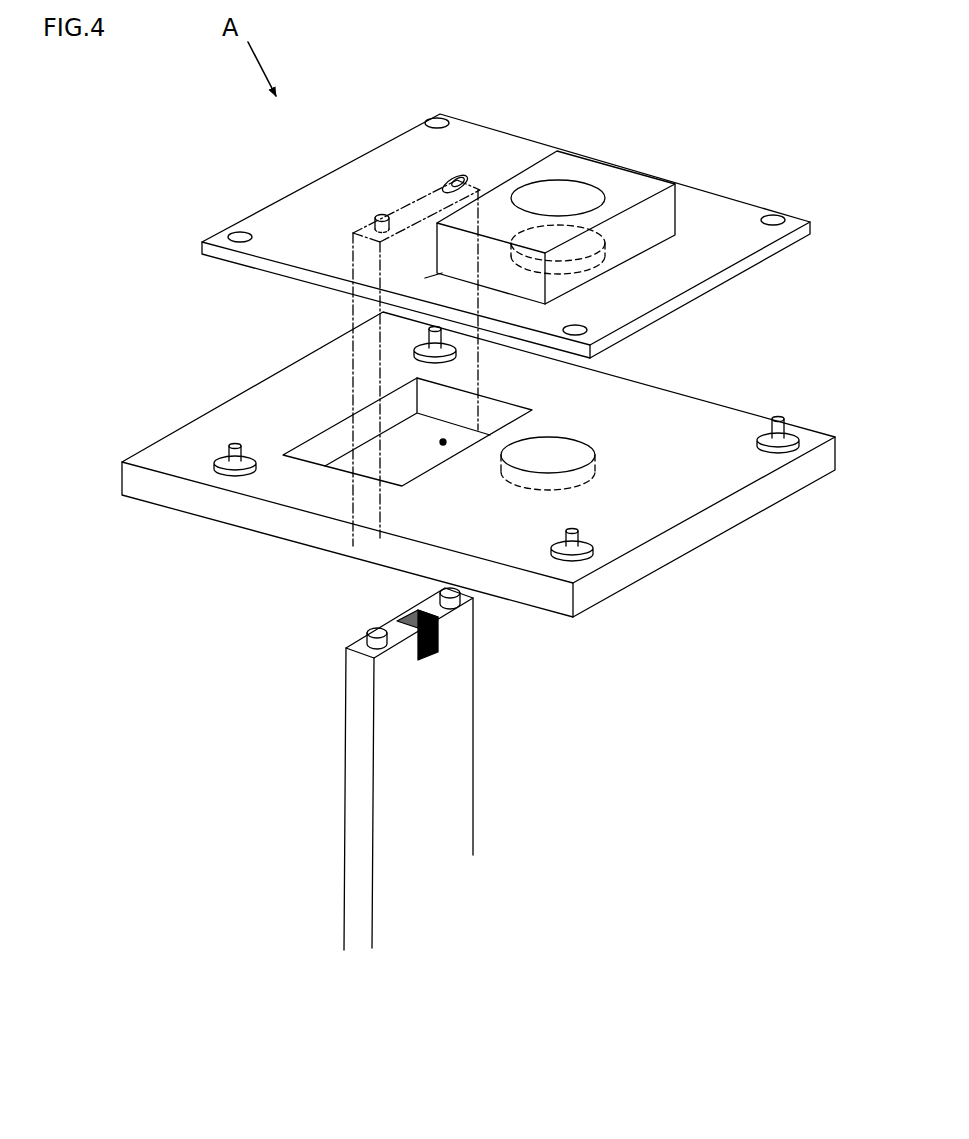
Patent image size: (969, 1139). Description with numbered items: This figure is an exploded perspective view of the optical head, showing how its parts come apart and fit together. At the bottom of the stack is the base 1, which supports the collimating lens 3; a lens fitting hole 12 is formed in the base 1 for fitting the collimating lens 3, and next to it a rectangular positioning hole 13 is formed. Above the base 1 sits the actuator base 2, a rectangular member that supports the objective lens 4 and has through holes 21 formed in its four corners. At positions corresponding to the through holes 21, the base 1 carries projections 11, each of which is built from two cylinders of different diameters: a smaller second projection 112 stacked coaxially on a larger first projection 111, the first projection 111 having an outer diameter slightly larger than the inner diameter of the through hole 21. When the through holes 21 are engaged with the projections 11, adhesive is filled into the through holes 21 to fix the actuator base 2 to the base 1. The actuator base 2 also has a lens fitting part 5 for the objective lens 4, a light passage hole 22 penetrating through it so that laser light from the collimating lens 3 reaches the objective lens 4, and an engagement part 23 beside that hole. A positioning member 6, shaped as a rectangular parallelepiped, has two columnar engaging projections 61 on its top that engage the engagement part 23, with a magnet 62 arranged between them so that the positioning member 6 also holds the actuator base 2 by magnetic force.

The base 1 is at (160, 455).
The actuator base 2 is at (510, 147).
The collimating lens 3 is at (548, 458).
The objective lens 4 is at (568, 190).
The lens fitting part 5 is at (656, 202).
The positioning member 6 is at (343, 333).
The projection 11 is at (193, 472).
The lens fitting hole 12 is at (597, 468).
The positioning hole 13 is at (446, 441).
The through hole 21 is at (439, 117).
The light passage hole 22 is at (420, 281).
The engagement part 23 is at (448, 184).
The engaging projection 61 is at (440, 593).
The magnet 62 is at (428, 660).
The first projection 111 is at (226, 472).
The second projection 112 is at (233, 444).